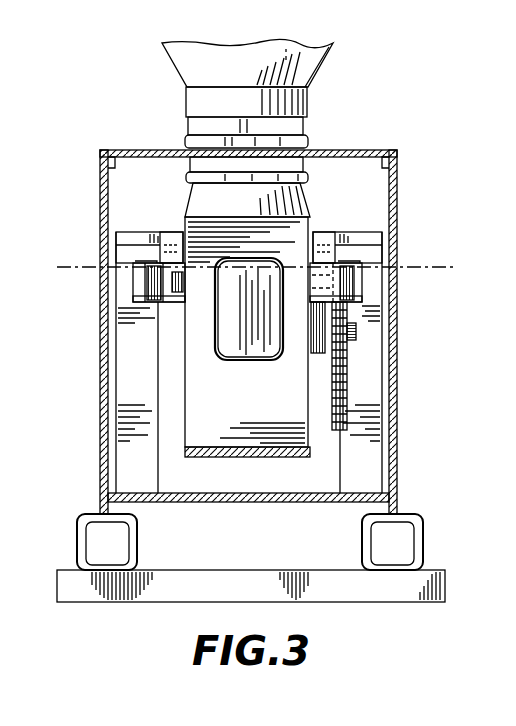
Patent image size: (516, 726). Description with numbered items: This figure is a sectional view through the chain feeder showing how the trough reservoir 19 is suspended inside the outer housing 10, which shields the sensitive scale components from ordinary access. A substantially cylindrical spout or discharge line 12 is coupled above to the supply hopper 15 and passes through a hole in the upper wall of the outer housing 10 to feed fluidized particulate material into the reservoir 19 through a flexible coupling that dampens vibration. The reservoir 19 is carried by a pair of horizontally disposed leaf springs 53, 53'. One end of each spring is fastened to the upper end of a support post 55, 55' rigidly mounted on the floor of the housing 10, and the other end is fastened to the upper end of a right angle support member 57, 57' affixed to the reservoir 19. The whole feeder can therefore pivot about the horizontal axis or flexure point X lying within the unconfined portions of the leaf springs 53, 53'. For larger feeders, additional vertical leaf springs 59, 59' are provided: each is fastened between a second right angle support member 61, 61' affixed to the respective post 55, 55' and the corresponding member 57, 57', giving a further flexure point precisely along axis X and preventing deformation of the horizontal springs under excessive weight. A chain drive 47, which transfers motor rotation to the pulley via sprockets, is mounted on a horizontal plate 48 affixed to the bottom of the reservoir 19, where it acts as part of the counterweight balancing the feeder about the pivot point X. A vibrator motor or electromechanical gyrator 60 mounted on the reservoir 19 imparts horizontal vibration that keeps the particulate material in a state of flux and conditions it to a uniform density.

The outer housing 10 is at (101, 151).
The spout or discharge line 12 is at (305, 130).
The supply hopper 15 is at (171, 60).
The trough reservoir 19 is at (246, 332).
The chain drive 47 is at (347, 398).
The horizontal plate 48 is at (212, 458).
The leaf spring 53 is at (374, 267).
The leaf spring 53' is at (119, 267).
The support post 55 is at (389, 362).
The support post 55' is at (103, 362).
The right angle support member 57 is at (374, 310).
The right angle support member 57' is at (118, 310).
The vertical leaf spring 59 is at (336, 223).
The vertical leaf spring 59' is at (155, 222).
The vibrator motor or electromechanical gyrator 60 is at (234, 345).
The second right angle support member 61 is at (376, 231).
The right angle support member 61' is at (120, 231).
The horizontal axis or flexure point X is at (265, 273).